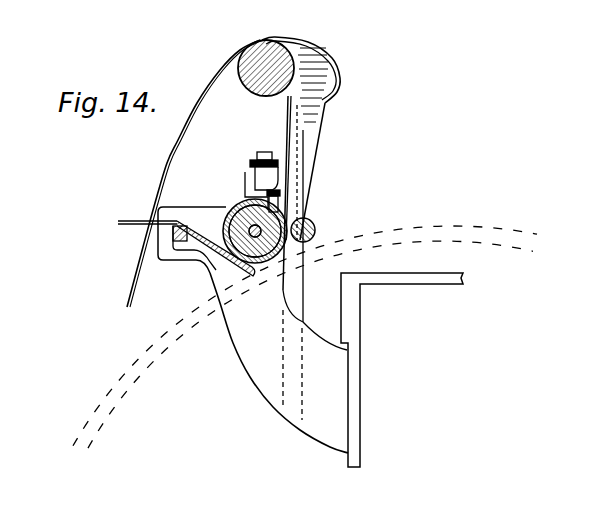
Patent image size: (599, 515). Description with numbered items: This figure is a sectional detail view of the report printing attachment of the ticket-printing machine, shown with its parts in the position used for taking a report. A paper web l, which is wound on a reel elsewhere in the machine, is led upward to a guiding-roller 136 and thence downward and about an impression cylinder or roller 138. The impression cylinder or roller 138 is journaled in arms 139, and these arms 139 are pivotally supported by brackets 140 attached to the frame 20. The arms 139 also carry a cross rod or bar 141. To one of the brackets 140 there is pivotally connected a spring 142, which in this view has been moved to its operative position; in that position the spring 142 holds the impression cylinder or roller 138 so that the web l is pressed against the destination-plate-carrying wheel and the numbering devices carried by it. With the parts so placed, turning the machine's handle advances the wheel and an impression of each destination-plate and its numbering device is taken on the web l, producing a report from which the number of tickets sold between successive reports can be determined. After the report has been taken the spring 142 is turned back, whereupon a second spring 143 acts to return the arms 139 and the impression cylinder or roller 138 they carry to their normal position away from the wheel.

The web l is at (172, 157).
The frame 20 is at (402, 370).
The guiding-roller 136 is at (337, 82).
The impression cylinder or roller 138 is at (237, 212).
The arms 139 is at (212, 230).
The brackets 140 is at (279, 363).
The cross rod or bar 141 is at (276, 195).
The spring 142 is at (260, 182).
The spring 143 is at (222, 262).